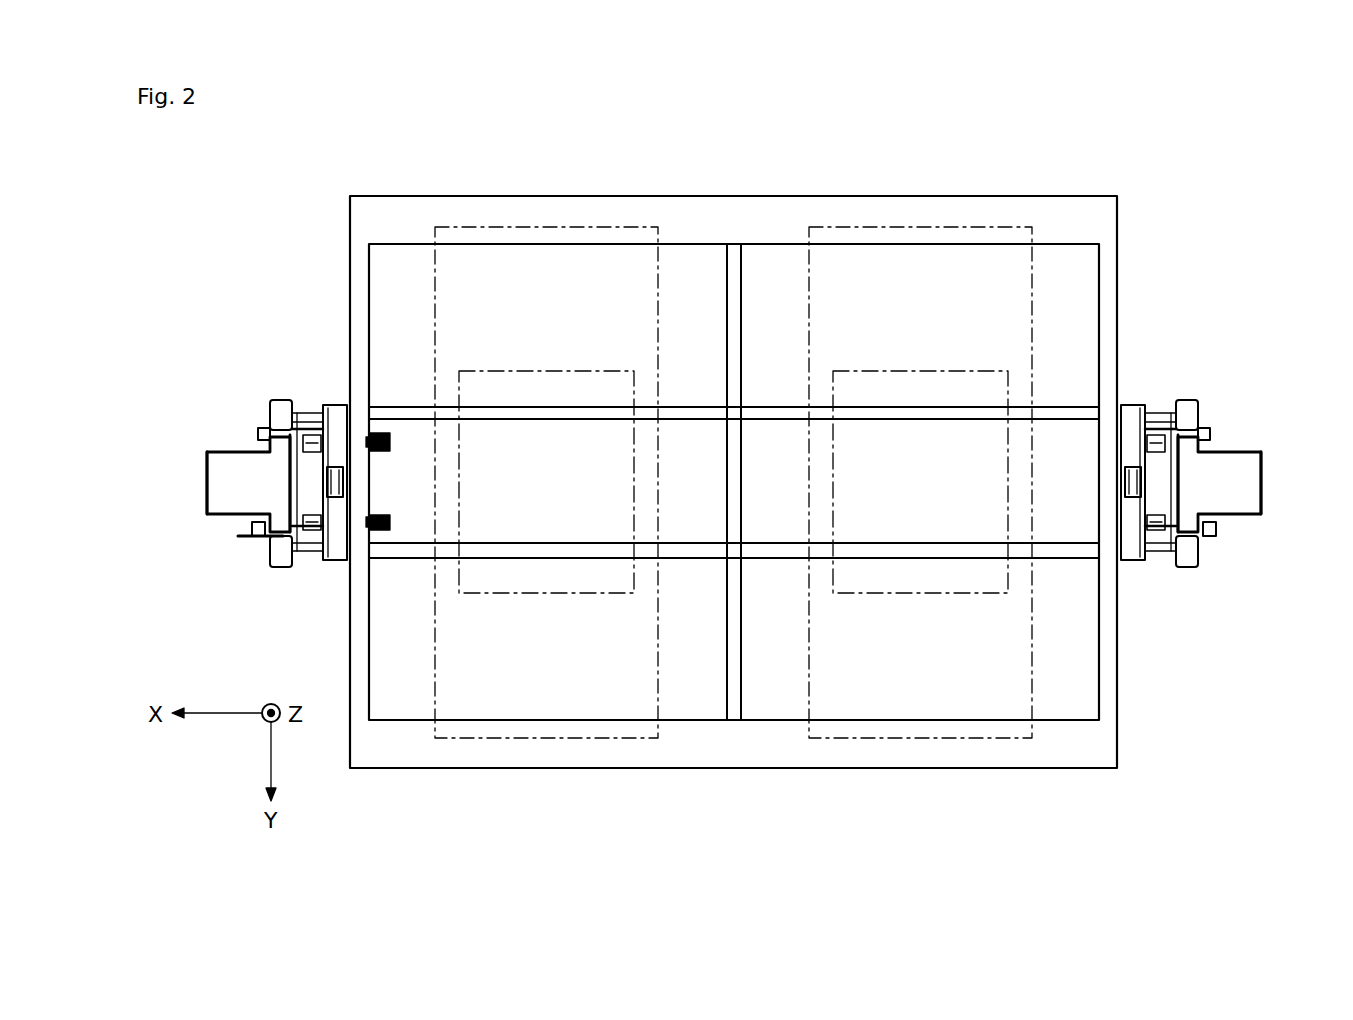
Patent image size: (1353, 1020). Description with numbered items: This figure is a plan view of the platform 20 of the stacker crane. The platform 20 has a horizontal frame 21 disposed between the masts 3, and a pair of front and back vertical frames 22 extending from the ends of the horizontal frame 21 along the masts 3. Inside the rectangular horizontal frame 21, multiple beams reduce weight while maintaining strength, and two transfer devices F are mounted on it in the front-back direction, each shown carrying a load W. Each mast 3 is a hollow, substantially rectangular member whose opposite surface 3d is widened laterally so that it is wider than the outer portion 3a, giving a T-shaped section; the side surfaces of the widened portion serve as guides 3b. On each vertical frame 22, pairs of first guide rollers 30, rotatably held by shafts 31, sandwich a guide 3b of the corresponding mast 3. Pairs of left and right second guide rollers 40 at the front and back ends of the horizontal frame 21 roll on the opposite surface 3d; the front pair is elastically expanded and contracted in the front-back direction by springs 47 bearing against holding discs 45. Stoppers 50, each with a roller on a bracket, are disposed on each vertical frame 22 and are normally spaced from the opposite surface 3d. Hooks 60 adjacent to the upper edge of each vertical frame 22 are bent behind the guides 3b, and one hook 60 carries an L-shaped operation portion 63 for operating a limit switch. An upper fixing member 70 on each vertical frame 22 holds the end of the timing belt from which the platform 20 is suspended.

The platform 20 is at (893, 190).
The horizontal frame 21 is at (762, 210).
The vertical frame 22 is at (336, 405).
The first guide roller 30 is at (274, 432).
The shaft 31 is at (303, 425).
The second guide roller 40 is at (282, 405).
The holding disc 45 is at (388, 432).
The spring 47 is at (378, 432).
The stopper 50 is at (320, 445).
The hook 60 is at (262, 438).
The operation portion 63 is at (245, 538).
The upper fixing member 70 is at (343, 482).
The mast 3 is at (198, 497).
The outer portion 3a is at (207, 456).
The guide 3b is at (258, 432).
The opposite surface 3d is at (262, 452).
The transfer device F is at (432, 268).
The wafer W is at (555, 370).